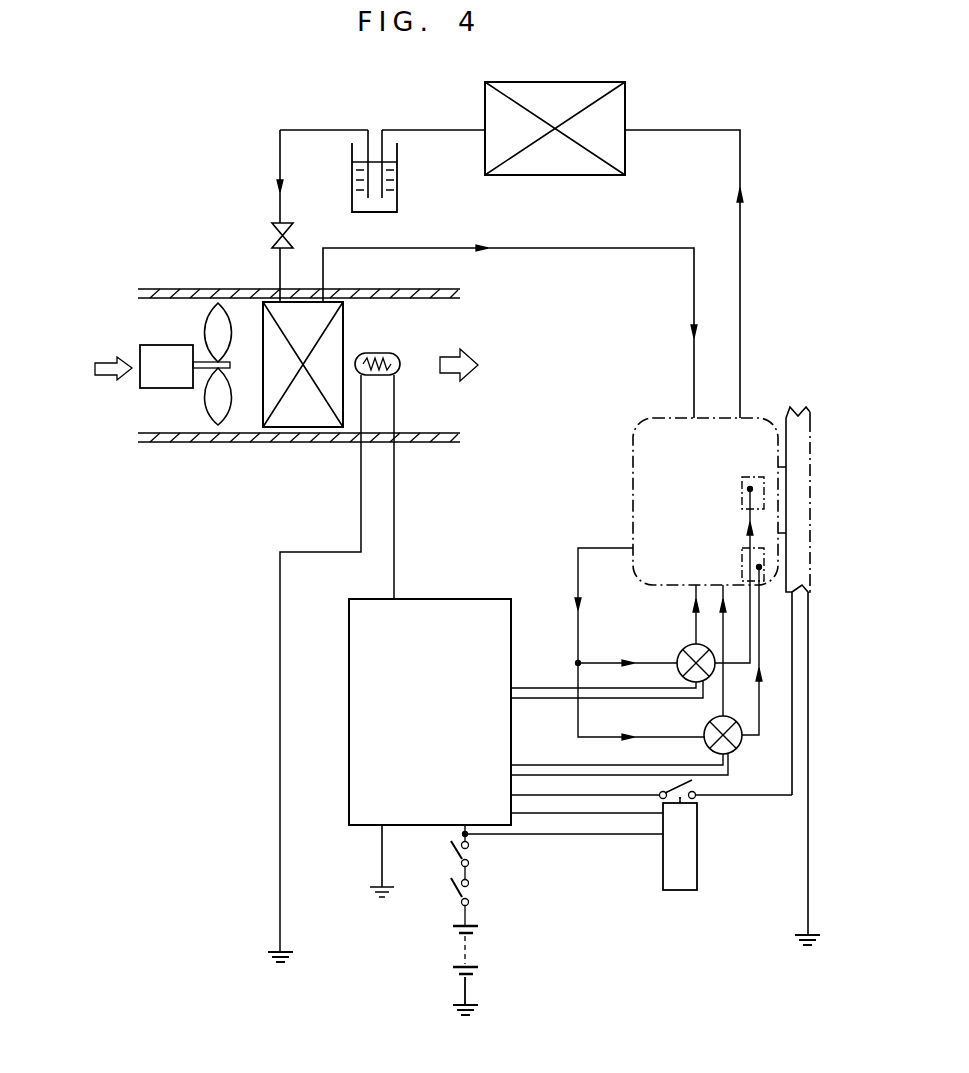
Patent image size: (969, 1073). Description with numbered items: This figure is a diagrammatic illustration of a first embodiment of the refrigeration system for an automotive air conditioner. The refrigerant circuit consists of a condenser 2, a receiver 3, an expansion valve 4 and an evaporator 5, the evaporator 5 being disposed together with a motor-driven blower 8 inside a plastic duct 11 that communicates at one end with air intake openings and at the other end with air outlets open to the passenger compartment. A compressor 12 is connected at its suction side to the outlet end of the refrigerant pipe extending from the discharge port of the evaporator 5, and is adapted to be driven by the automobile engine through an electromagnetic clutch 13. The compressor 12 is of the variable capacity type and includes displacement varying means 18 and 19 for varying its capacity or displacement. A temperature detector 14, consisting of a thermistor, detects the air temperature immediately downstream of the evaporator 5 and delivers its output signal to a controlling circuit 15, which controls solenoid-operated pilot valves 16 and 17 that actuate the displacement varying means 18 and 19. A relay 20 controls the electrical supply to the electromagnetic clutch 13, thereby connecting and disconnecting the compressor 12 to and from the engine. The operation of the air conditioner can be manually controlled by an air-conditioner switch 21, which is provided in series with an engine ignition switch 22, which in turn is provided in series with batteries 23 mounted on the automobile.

The condenser 2 is at (575, 82).
The receiver 3 is at (398, 183).
The expansion valve 4 is at (272, 233).
The evaporator 5 is at (292, 427).
The blower 8 is at (216, 303).
The duct 11 is at (412, 290).
The compressor 12 is at (672, 418).
The electromagnetic clutch 13 is at (808, 390).
The temperature detector 14 is at (388, 355).
The controlling circuit 15 is at (461, 599).
The solenoid-operated pilot valve 16 is at (680, 650).
The solenoid-operated pilot valve 17 is at (737, 750).
The displacement varying means 18 is at (740, 486).
The displacement varying means 19 is at (740, 555).
The relay 20 is at (698, 838).
The air-conditioner switch 21 is at (469, 855).
The engine ignition switch 22 is at (469, 893).
The batteries 23 is at (468, 945).